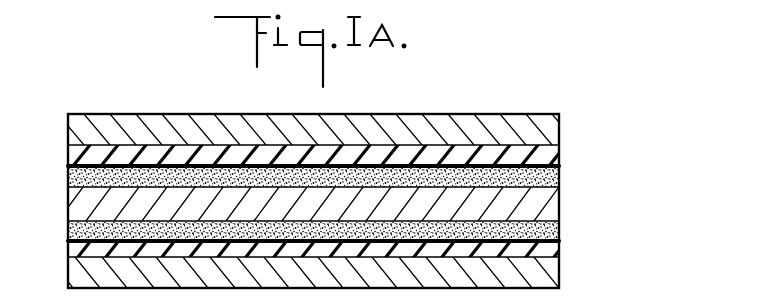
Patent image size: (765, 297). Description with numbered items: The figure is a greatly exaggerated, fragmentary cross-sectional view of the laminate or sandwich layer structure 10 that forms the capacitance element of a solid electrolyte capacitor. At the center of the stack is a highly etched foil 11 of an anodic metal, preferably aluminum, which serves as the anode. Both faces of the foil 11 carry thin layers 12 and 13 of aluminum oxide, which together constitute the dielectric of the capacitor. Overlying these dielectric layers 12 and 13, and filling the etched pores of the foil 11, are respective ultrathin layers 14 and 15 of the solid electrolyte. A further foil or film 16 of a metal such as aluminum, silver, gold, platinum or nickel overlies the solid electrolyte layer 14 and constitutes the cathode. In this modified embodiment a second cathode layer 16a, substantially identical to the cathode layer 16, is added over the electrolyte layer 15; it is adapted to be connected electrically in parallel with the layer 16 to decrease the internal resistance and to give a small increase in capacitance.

The laminate structure 10 is at (536, 77).
The second cathode layer 16a is at (547, 132).
The solid electrolyte layer 15 is at (545, 158).
The aluminum oxide layer 13 is at (553, 182).
The etched foil 11 is at (547, 210).
The aluminum oxide layer 12 is at (548, 232).
The solid electrolyte layer 14 is at (550, 250).
The cathode foil 16 is at (545, 277).